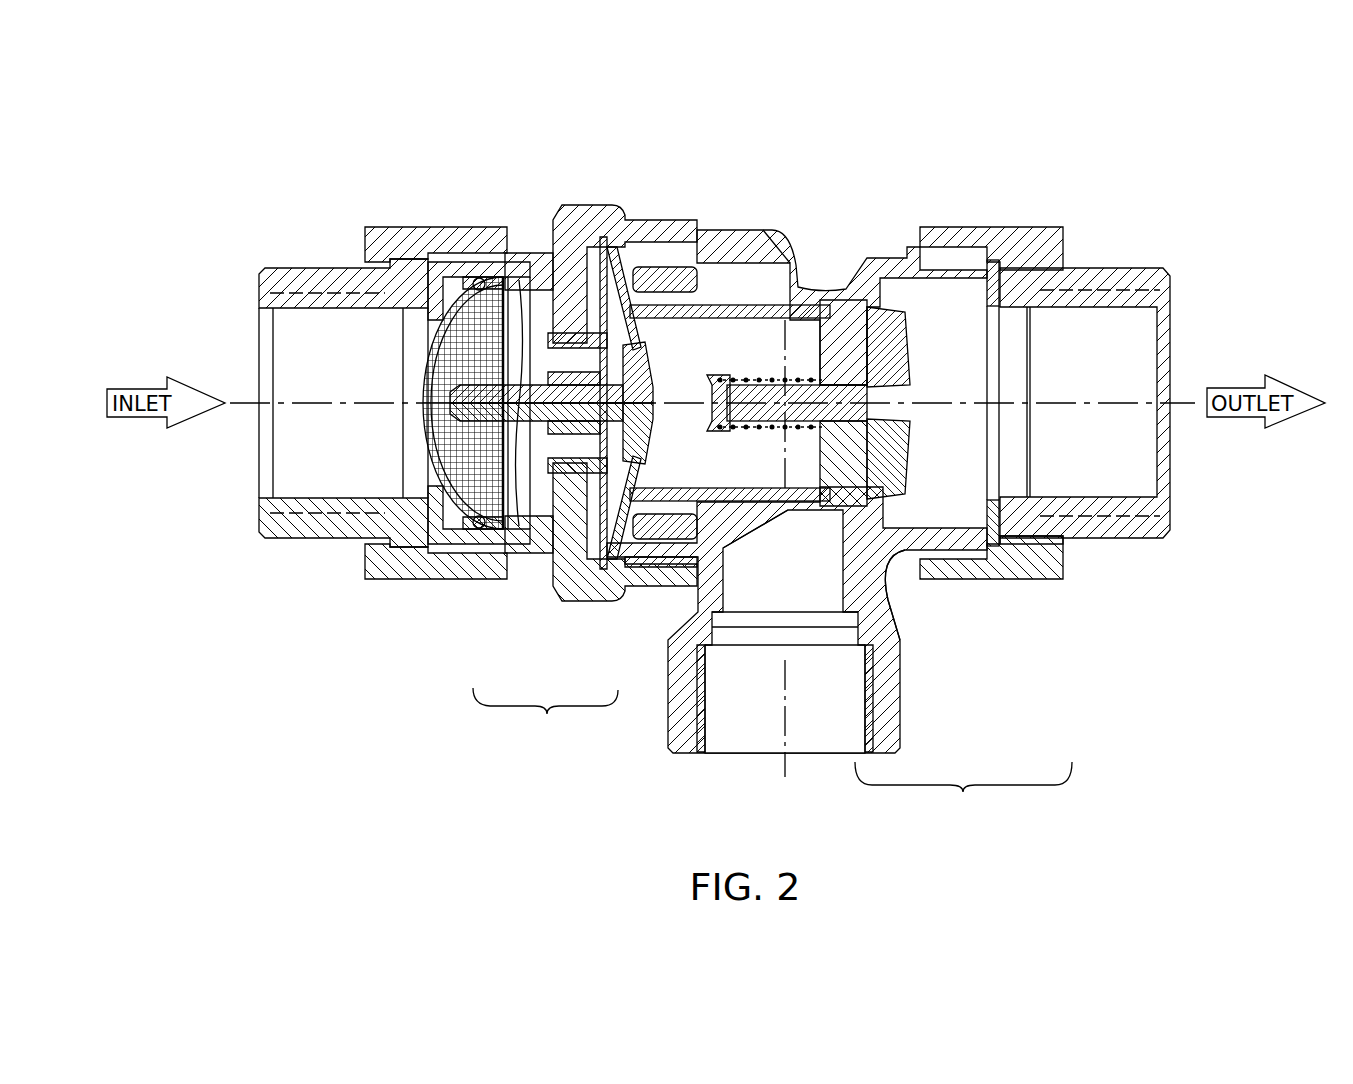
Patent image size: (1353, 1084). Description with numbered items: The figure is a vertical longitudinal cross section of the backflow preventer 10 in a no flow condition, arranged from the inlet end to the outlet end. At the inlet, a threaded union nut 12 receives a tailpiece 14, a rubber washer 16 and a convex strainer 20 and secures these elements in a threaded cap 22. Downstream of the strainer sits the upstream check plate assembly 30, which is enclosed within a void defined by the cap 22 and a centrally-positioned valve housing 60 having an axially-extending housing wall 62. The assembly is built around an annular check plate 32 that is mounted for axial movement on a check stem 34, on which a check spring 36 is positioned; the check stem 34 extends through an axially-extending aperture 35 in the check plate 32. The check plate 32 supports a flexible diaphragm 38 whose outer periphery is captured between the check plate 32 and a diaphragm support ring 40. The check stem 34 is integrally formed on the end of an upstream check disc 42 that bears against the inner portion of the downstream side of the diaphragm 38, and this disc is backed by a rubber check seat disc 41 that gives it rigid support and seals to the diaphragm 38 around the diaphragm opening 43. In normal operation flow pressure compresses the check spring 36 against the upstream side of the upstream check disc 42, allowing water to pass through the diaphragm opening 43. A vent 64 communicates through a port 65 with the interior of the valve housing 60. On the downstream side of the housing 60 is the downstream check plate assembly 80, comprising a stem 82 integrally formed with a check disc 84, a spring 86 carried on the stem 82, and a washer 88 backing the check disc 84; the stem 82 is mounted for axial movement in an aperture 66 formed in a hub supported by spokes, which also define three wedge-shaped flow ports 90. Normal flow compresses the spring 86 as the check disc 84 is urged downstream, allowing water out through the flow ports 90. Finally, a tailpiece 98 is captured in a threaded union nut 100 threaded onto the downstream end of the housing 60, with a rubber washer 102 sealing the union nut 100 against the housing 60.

The backflow preventer 10 is at (611, 135).
The threaded union nut 12 is at (378, 222).
The tailpiece 14 is at (283, 278).
The rubber washer 16 is at (411, 258).
The convex strainer 20 is at (445, 467).
The threaded cap 22 is at (570, 206).
The upstream check plate assembly 30 is at (545, 716).
The annular check plate 32 is at (545, 527).
The check stem 34 is at (480, 515).
The axially-extending aperture 35 is at (527, 275).
The check spring 36 is at (483, 274).
The flexible diaphragm 38 is at (625, 237).
The diaphragm support ring 40 is at (655, 575).
The rubber check seat disc 41 is at (660, 345).
The upstream check disc 42 is at (641, 363).
The diaphragm opening 43 is at (655, 262).
The valve housing 60 is at (813, 345).
The housing wall 62 is at (705, 548).
The vent 64 is at (862, 722).
The port 65 is at (770, 508).
The aperture 66 is at (872, 300).
The downstream check plate assembly 80 is at (963, 790).
The stem 82 is at (787, 392).
The check disc 84 is at (905, 353).
The spring 86 is at (755, 382).
The washer 88 is at (933, 562).
The wedge-shaped flow ports 90 is at (900, 560).
The tailpiece 98 is at (1143, 266).
The threaded union nut 100 is at (1047, 566).
The rubber washer 102 is at (1002, 256).